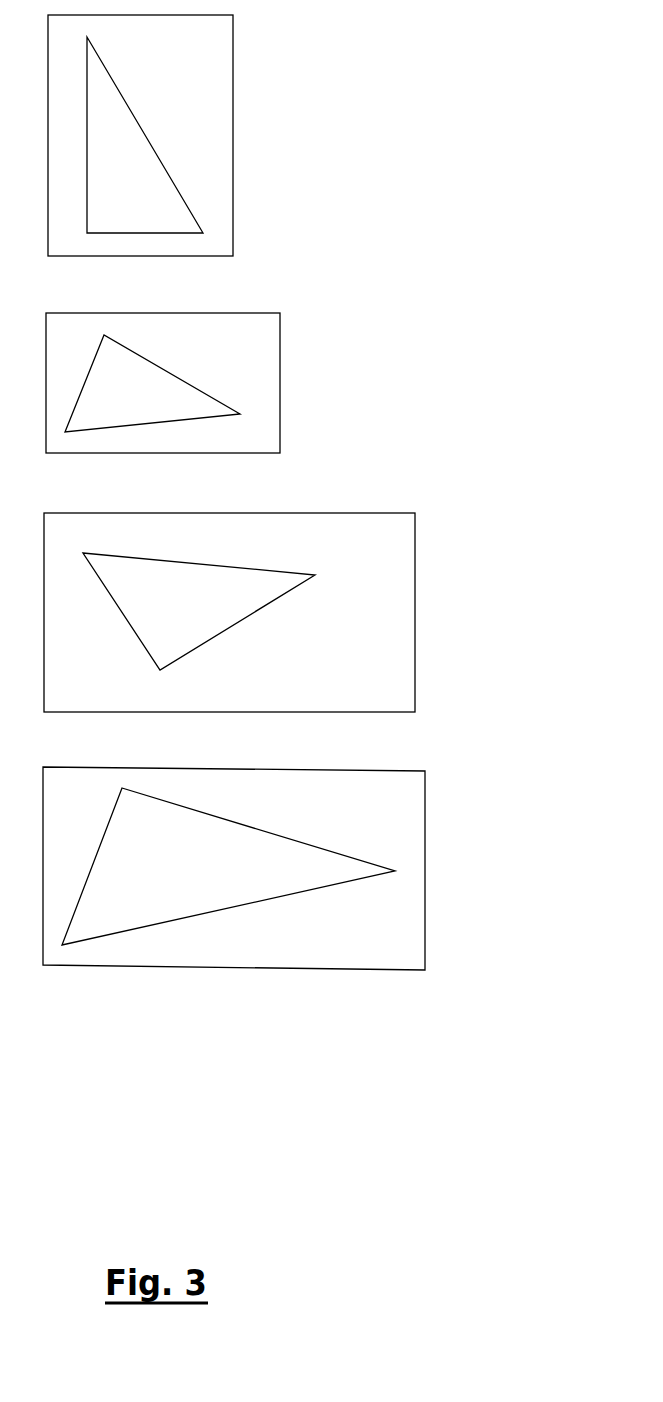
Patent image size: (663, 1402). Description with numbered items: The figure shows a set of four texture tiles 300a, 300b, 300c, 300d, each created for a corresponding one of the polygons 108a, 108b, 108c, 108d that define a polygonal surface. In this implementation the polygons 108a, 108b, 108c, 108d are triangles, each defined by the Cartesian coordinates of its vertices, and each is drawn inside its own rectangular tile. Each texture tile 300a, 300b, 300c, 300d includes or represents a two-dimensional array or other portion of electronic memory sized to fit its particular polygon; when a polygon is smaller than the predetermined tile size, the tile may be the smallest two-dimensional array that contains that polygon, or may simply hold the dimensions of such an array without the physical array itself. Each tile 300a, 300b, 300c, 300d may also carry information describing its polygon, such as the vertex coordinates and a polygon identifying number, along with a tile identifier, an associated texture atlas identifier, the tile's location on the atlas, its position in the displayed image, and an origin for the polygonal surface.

The polygon 108a is at (108, 70).
The polygon 108b is at (170, 373).
The polygon 108c is at (250, 596).
The polygon 108d is at (228, 861).
The texture tile 300a is at (227, 105).
The texture tile 300b is at (232, 383).
The texture tile 300c is at (299, 612).
The texture tile 300d is at (302, 863).